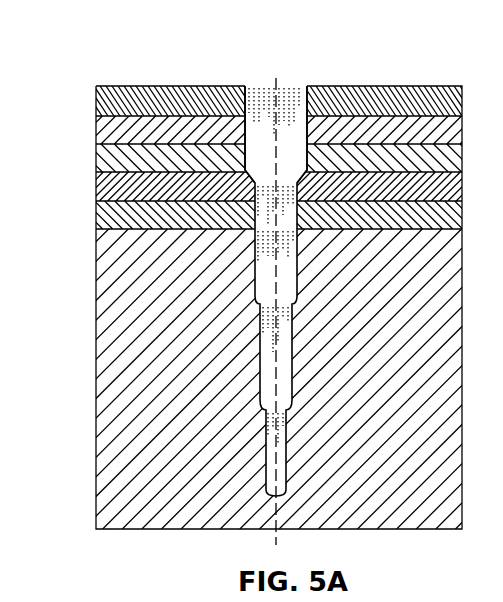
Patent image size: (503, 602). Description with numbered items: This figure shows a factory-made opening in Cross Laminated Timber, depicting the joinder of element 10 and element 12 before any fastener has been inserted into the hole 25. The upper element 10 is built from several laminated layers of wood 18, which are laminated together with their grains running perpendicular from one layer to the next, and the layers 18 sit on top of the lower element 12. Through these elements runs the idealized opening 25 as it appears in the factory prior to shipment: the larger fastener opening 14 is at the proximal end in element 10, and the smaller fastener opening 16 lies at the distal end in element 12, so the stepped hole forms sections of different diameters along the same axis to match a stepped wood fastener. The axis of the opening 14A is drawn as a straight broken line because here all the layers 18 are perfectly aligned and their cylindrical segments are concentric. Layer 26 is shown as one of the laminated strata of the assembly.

The element 10 is at (97, 132).
The element 12 is at (110, 493).
The fastener opening 14 is at (302, 87).
The axis of the opening 14A is at (275, 78).
The fastener opening 16 is at (247, 234).
The layers of wood 18 is at (97, 100).
The opening 25 is at (248, 66).
The etch stop layer 26 is at (97, 215).